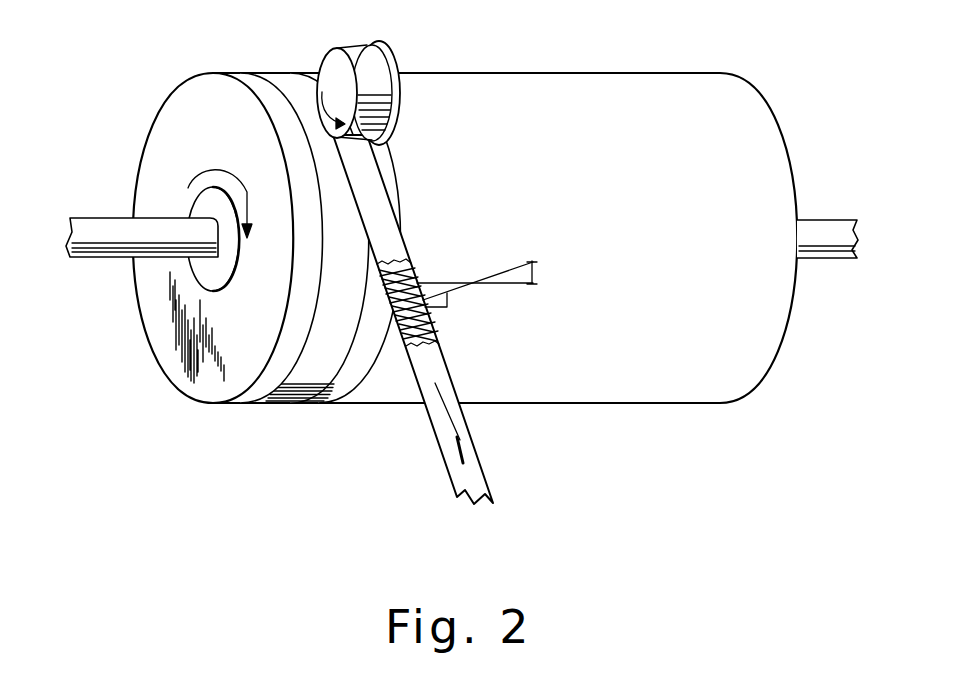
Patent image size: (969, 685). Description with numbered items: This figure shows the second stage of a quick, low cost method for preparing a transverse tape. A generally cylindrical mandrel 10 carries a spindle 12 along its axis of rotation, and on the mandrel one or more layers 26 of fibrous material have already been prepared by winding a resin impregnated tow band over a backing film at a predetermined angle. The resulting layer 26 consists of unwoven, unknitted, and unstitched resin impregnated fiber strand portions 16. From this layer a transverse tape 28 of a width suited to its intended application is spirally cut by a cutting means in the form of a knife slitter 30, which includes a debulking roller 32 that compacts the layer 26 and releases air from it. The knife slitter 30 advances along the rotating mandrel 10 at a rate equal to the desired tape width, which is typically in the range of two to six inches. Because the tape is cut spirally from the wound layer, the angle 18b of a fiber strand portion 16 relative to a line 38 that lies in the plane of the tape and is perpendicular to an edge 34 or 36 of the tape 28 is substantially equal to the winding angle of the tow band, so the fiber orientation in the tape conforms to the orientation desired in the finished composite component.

The mandrel 10 is at (251, 397).
The spindle 12 is at (98, 218).
The fiber strand portions 16 is at (436, 330).
The angle 18b is at (535, 277).
The layer of fibrous material 26 is at (631, 82).
The transverse tape 28 is at (449, 392).
The knife slitter 30 is at (393, 64).
The debulking roller 32 is at (330, 62).
The edge of the tape 34 is at (418, 386).
The edge of the tape 36 is at (473, 439).
The line perpendicular to an edge 38 is at (497, 271).